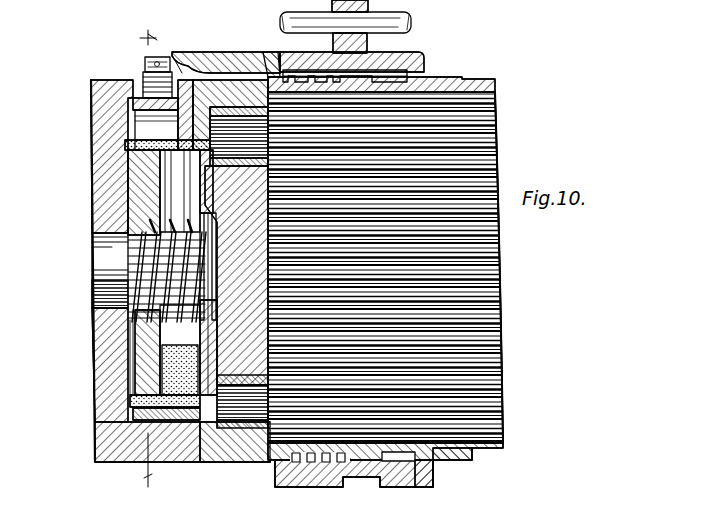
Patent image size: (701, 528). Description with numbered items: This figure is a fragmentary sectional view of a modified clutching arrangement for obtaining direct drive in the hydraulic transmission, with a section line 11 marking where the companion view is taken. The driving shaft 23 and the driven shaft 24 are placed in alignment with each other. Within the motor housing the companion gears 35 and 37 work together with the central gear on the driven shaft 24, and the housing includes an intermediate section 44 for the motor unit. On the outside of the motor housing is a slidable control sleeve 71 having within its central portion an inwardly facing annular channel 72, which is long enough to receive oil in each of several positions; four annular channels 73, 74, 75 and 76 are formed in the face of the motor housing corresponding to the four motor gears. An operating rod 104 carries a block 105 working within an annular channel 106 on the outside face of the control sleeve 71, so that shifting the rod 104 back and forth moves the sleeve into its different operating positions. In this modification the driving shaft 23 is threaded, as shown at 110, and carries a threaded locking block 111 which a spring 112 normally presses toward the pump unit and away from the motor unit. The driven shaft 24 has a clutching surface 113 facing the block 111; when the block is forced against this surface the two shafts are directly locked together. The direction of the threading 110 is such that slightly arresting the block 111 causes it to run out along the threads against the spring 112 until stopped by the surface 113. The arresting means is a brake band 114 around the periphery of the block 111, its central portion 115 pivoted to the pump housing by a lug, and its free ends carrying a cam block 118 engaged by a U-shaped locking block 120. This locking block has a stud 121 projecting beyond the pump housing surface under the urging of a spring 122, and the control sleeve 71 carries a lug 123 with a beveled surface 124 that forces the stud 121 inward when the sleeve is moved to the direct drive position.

The section line 11 is at (158, 30).
The driving shaft 23 is at (97, 257).
The driven shaft 24 is at (497, 255).
The companion gear 35 is at (497, 390).
The companion gear 37 is at (495, 129).
The intermediate section 44 is at (492, 84).
The control sleeve 71 is at (465, 462).
The annular channel 72 is at (425, 480).
The annular channel 73 is at (332, 462).
The annular channel 74 is at (311, 462).
The annular channel 75 is at (296, 462).
The annular channel 76 is at (278, 470).
The operating rod 104 is at (413, 18).
The block 105 is at (400, 46).
The annular channel 106 is at (462, 66).
The threading 110 is at (140, 260).
The locking block 111 is at (143, 345).
The spring 112 is at (173, 323).
The clutching surface 113 is at (193, 170).
The brake band 114 is at (143, 400).
The central portion 115 is at (147, 417).
The cam block 118 is at (143, 124).
The U-shaped locking block 120 is at (135, 98).
The stud 121 is at (147, 58).
The spring 122 is at (138, 72).
The lug 123 is at (260, 52).
The beveled surface 124 is at (175, 58).